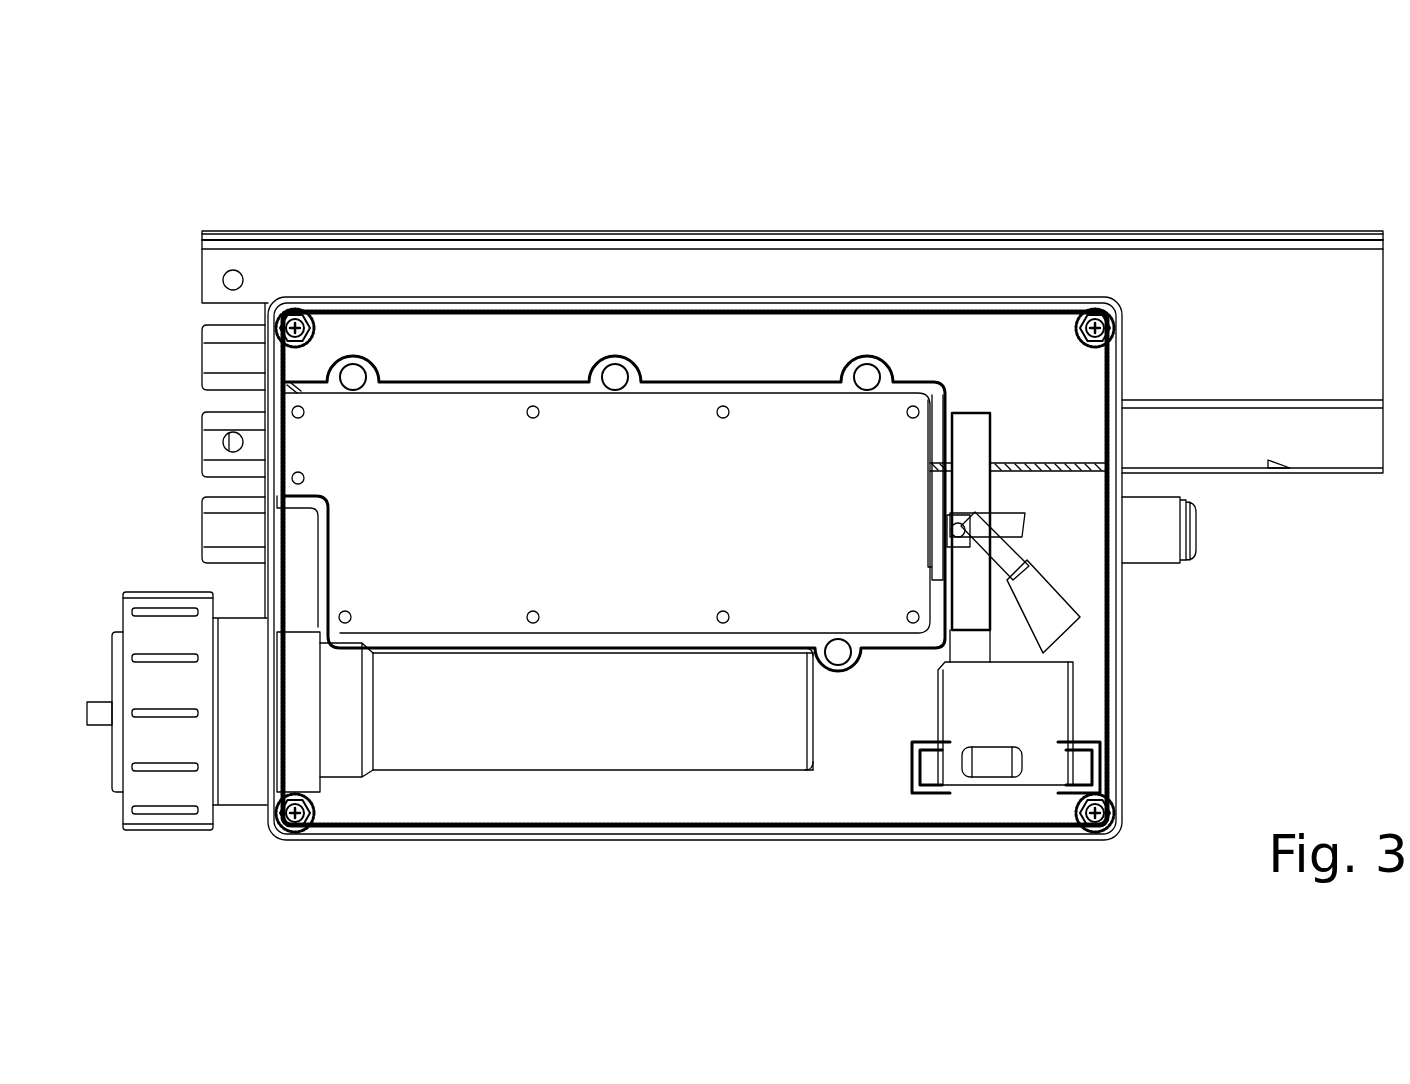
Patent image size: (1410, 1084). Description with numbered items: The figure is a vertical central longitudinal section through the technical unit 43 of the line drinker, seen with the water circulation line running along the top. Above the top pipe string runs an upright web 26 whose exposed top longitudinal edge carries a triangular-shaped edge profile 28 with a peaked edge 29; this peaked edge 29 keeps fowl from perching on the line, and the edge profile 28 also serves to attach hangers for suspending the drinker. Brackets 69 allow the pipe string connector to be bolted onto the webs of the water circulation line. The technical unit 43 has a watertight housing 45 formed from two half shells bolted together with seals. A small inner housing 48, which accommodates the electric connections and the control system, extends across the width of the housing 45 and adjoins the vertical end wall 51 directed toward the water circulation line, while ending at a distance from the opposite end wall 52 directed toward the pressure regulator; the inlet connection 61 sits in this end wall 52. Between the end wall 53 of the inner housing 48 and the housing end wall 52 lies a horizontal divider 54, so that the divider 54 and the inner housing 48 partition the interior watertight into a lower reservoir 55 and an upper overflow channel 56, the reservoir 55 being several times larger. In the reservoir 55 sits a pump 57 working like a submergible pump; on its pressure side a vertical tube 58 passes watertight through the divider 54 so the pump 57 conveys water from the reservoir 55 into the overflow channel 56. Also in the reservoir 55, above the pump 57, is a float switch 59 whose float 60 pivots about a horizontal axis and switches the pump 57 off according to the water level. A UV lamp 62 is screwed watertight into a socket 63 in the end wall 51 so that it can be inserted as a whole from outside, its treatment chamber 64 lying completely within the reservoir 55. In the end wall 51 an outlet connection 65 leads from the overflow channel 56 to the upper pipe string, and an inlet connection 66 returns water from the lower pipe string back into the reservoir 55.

The upright web 26 is at (518, 273).
The edge profile 28 is at (413, 247).
The peaked edge 29 is at (655, 232).
The technical unit 43 is at (1198, 190).
The watertight housing 45 is at (953, 403).
The inner housing 48 is at (740, 514).
The end wall 51 is at (272, 588).
The end wall 52 is at (1122, 688).
The end wall of the inner housing 53 is at (962, 395).
The horizontal divider 54 is at (1065, 460).
The reservoir 55 is at (834, 795).
The overflow channel 56 is at (730, 343).
The pump 57 is at (1037, 735).
The vertical tube 58 is at (980, 447).
The float switch 59 is at (947, 526).
The float 60 is at (1058, 604).
The inlet connection 61 is at (1167, 536).
The UV lamp 62 is at (663, 737).
The socket 63 is at (310, 748).
The treatment chamber 64 is at (534, 718).
The outlet connection 65 is at (250, 355).
The inlet connection 66 is at (218, 530).
The brackets 69 is at (222, 265).